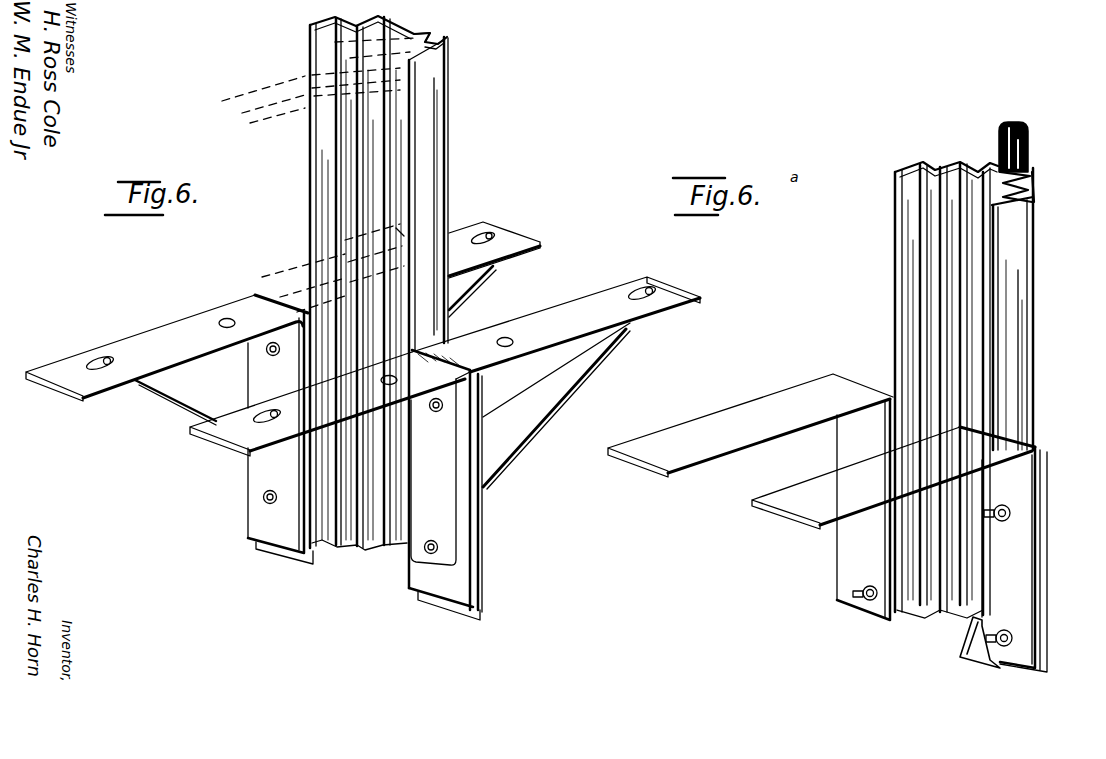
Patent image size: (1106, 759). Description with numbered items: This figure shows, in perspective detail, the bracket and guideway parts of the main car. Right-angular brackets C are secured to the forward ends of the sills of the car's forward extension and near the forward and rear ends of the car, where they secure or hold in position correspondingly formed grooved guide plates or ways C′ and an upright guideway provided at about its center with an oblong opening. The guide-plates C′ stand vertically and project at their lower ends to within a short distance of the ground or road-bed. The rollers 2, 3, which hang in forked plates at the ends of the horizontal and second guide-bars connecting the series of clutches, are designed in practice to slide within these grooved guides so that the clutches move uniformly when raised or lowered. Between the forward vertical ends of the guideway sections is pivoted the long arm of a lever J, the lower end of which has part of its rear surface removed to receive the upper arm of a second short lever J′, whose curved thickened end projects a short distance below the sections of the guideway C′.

In FIG. 6, the right-angular brackets C is at (167, 332).
In FIG. 6A, the right-angular brackets C is at (827, 523).
In FIG. 6, the roller 2 is at (408, 43).
In FIG. 6, the roller 3 is at (400, 233).
In FIG. 6A, the guide-plates C′ is at (967, 357).
In FIG. 6A, the lever J is at (1027, 161).
In FIG. 6A, the second short lever J′ is at (973, 617).